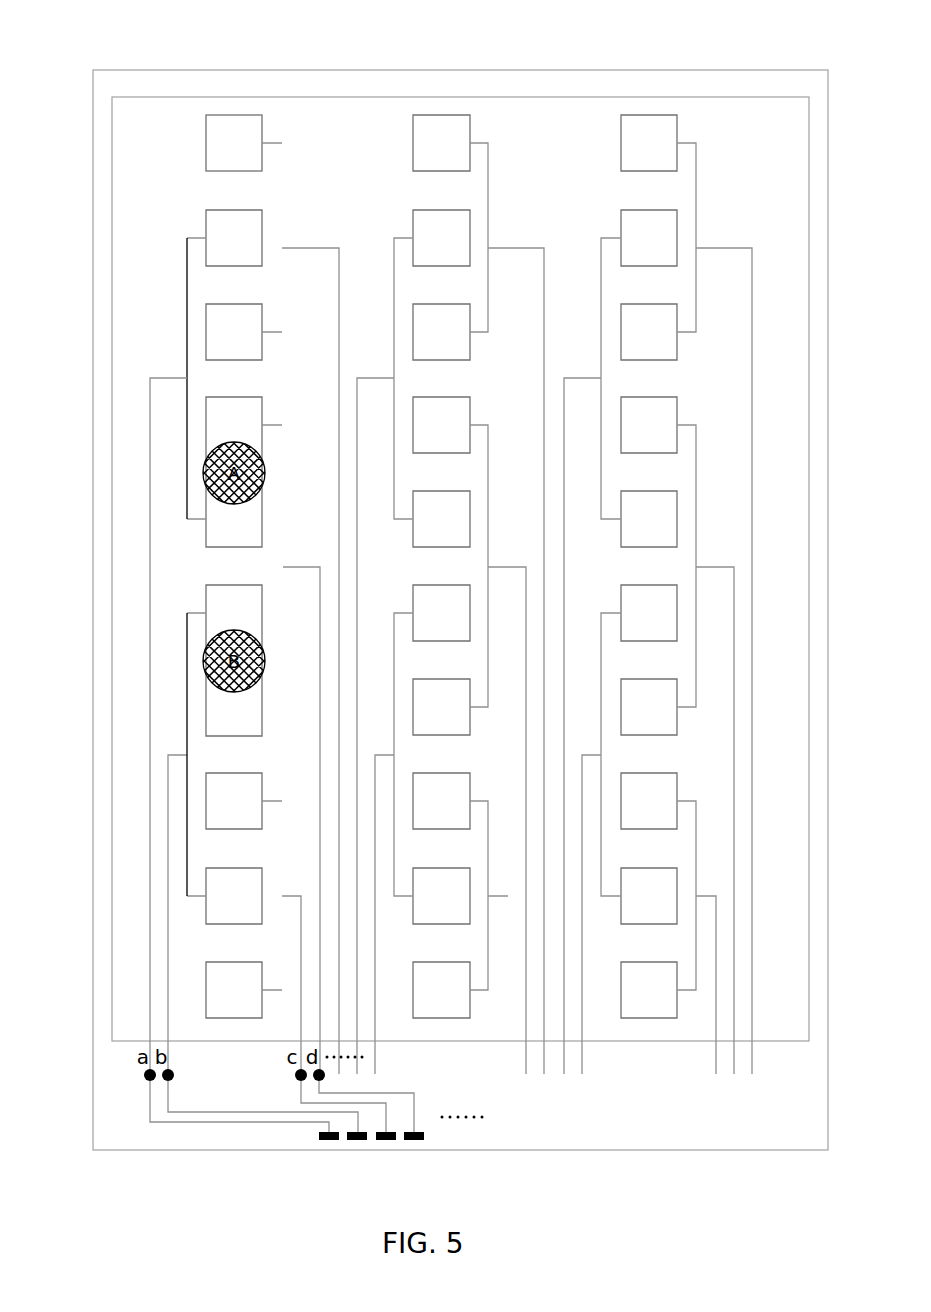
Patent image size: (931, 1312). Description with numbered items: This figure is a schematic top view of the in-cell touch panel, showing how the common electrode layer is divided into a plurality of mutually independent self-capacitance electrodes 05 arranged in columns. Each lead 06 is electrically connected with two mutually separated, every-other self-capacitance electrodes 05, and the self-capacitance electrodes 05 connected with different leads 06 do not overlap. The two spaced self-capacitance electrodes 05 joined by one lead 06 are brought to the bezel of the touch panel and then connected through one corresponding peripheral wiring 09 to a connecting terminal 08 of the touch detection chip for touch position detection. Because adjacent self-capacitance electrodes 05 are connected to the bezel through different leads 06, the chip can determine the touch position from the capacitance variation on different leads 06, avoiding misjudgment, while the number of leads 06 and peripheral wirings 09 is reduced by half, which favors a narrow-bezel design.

The self-capacitance electrode 05 is at (233, 115).
The lead 06 is at (150, 939).
The connecting terminal 08 is at (323, 1142).
The peripheral wiring 09 is at (249, 1122).